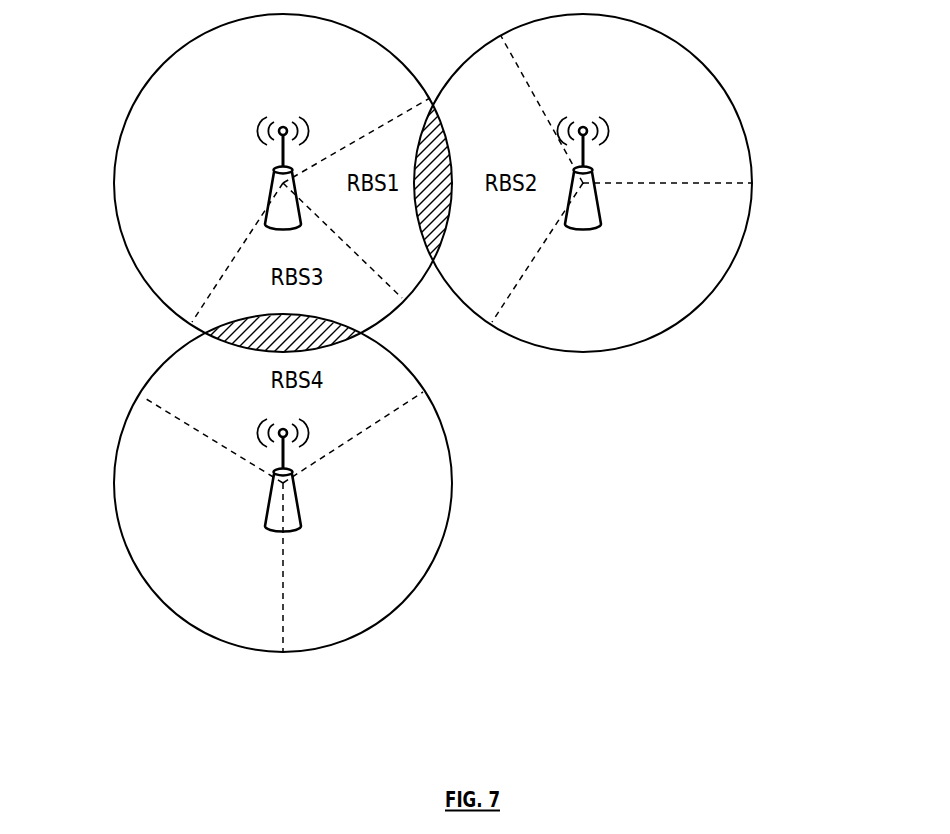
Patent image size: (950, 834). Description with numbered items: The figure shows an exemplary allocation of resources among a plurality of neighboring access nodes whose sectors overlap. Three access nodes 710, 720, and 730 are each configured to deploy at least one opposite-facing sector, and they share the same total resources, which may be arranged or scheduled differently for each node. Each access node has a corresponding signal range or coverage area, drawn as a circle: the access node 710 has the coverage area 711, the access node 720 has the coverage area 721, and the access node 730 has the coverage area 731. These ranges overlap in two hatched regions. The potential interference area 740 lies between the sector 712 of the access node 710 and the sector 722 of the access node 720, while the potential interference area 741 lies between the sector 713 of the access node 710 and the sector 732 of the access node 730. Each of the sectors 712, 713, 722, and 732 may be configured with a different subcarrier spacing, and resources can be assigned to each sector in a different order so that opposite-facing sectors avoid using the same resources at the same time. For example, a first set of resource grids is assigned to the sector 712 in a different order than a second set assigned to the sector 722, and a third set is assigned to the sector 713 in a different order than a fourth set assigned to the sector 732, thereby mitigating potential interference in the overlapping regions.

The access node 710 is at (270, 183).
The coverage area 711 is at (118, 223).
The sector 712 is at (397, 108).
The sector 713 is at (235, 252).
The access node 720 is at (602, 210).
The coverage area 721 is at (748, 230).
The sector 722 is at (525, 80).
The access node 730 is at (275, 532).
The coverage area 731 is at (178, 615).
The sector 732 is at (353, 440).
The potential interference area 740 is at (433, 226).
The potential interference area 741 is at (264, 332).